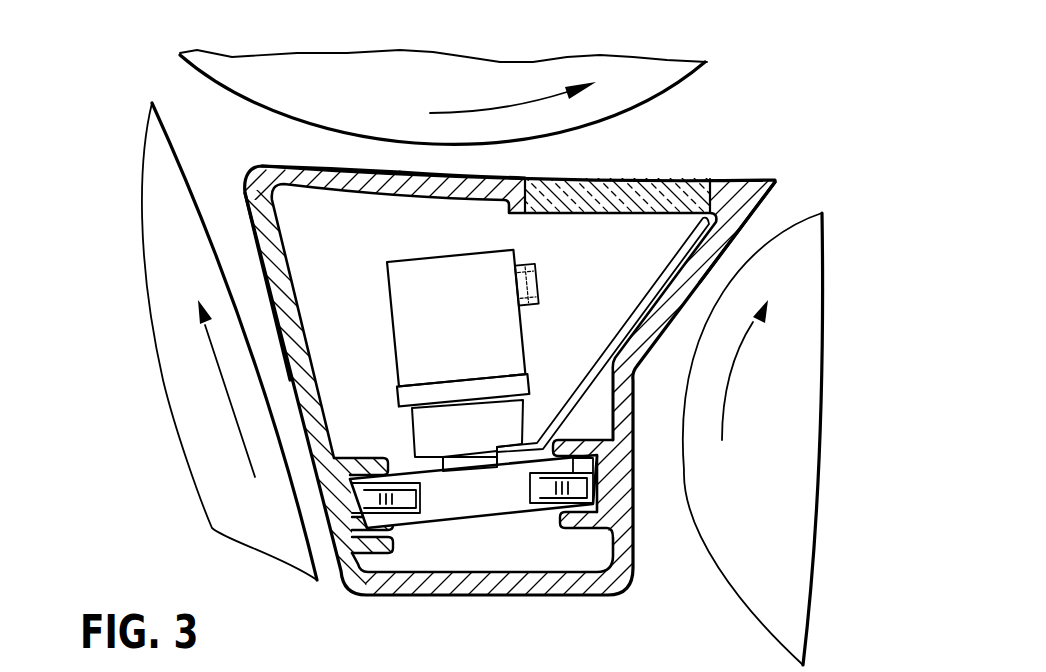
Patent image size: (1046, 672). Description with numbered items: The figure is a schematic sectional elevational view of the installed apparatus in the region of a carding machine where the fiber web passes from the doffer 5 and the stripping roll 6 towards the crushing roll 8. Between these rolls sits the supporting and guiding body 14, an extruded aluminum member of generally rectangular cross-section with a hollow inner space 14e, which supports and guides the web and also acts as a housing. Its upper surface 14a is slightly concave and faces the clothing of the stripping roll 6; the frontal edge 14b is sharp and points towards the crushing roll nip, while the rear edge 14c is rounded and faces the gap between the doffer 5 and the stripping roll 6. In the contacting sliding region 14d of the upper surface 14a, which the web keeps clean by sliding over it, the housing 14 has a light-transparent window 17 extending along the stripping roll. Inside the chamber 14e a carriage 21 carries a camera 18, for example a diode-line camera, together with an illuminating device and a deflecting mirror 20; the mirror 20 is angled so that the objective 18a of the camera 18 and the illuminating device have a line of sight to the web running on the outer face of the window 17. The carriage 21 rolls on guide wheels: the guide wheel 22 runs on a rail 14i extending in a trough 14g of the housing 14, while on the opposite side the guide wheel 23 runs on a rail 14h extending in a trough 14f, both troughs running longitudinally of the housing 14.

The doffer 5 is at (193, 413).
The stripping roll 6 is at (275, 70).
The crushing roll 8 is at (763, 597).
The supporting and guiding body 14 is at (482, 594).
The upper surface 14a is at (305, 160).
The frontal edge 14b is at (783, 180).
The rear edge 14c is at (257, 165).
The contacting sliding region 14d is at (778, 178).
The hollow inner space 14e is at (400, 560).
The trough 14f is at (380, 483).
The trough 14g is at (585, 460).
The rail 14h is at (362, 508).
The rail 14i is at (407, 176).
The light-transparent window 17 is at (627, 215).
The camera 18 is at (407, 284).
The objective 18a is at (540, 300).
The deflecting mirror 20 is at (705, 237).
The carriage 21 is at (507, 498).
The guide wheel 22 is at (580, 487).
The guide wheel 23 is at (352, 553).